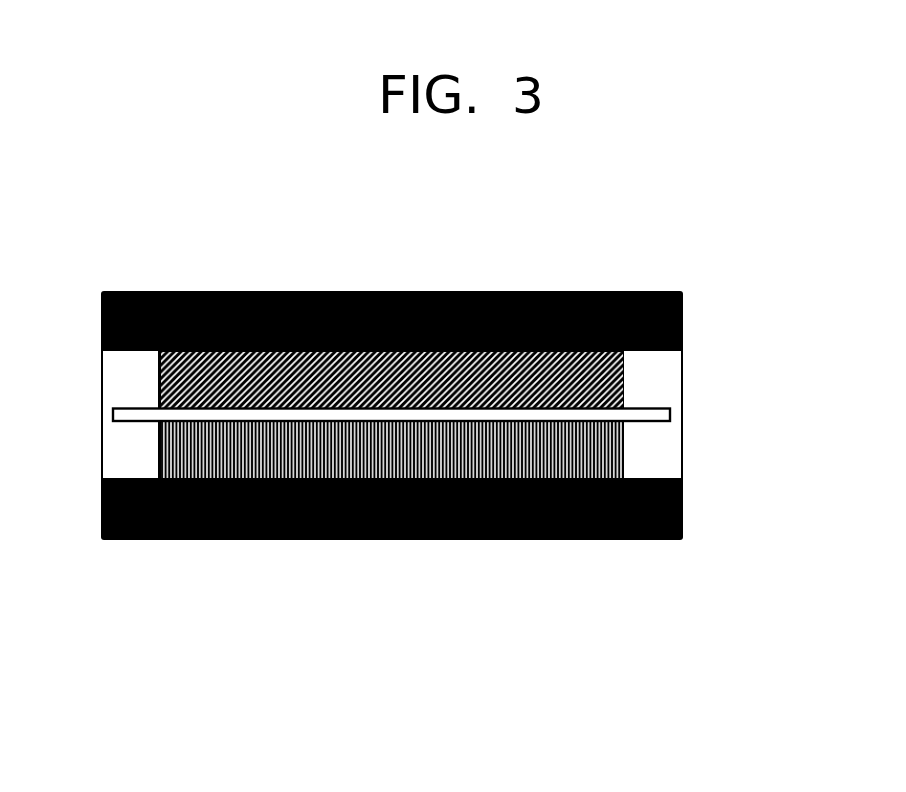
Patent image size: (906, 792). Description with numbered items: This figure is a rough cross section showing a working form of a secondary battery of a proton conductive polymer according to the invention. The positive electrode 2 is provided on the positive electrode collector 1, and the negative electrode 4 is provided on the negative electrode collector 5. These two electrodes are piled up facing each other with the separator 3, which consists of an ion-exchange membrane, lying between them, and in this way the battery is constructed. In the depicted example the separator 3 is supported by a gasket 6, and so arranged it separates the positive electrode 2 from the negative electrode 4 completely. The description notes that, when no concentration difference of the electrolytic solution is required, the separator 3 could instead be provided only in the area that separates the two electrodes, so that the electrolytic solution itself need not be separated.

The positive electrode collector 1 is at (412, 423).
The positive electrode 2 is at (625, 377).
The separator 3 is at (670, 416).
The negative electrode 4 is at (600, 457).
The negative electrode collector 5 is at (548, 541).
The gasket 6 is at (123, 443).